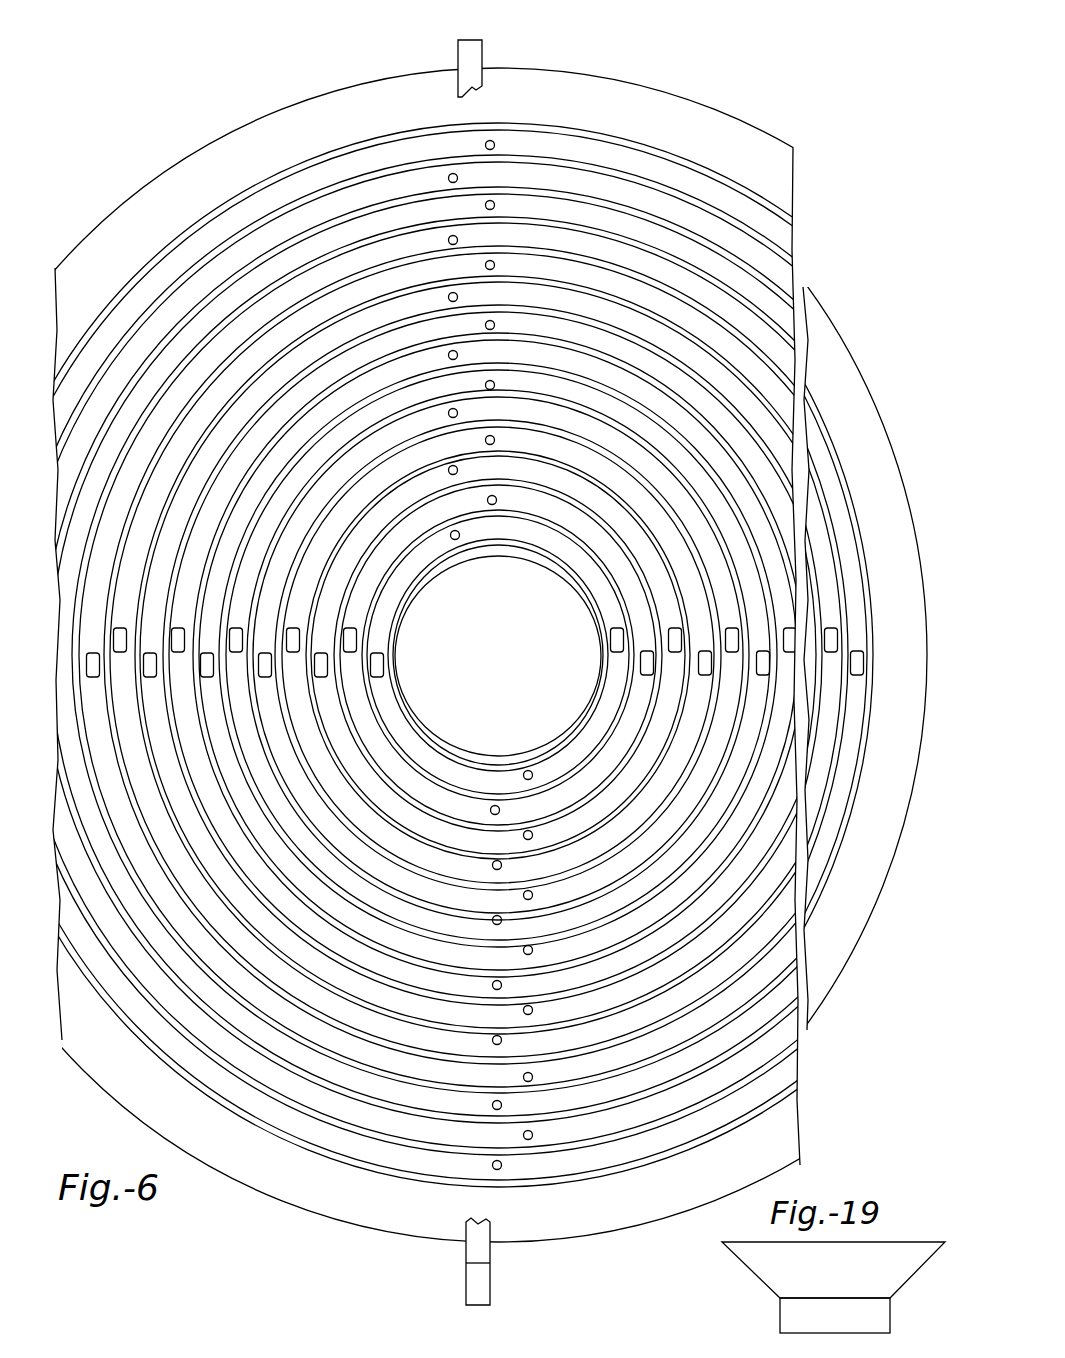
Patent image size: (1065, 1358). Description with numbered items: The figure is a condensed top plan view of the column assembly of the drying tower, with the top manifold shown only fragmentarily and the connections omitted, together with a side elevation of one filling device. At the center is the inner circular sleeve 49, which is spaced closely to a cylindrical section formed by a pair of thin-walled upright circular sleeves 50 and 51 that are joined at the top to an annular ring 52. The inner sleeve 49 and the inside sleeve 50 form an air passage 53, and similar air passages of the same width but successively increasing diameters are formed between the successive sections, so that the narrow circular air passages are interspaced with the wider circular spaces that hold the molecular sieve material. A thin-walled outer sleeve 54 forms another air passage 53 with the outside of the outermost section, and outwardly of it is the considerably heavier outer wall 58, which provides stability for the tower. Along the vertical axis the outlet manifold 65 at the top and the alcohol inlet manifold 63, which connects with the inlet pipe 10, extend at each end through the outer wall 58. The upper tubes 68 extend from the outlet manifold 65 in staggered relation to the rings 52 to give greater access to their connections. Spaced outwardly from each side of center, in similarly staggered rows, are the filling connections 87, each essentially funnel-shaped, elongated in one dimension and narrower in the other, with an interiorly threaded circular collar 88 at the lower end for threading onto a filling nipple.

In FIG. 6, the inlet pipe 10 is at (466, 1291).
In FIG. 6, the inner circular sleeve 49 is at (413, 714).
In FIG. 6, the inside sleeve 50 is at (446, 151).
In FIG. 6, the outside sleeve 51 is at (321, 164).
In FIG. 6, the annular ring 52 is at (376, 156).
In FIG. 6, the air passage 53 is at (246, 198).
In FIG. 6, the outer sleeve 54 is at (183, 242).
In FIG. 6, the outer wall 58 is at (623, 80).
In FIG. 6, the alcohol inlet manifold 63 is at (491, 1248).
In FIG. 6, the outlet manifold 65 is at (483, 45).
In FIG. 6, the upper tubes 68 is at (457, 174).
In FIG. 6, the filling connection 87 is at (113, 641).
In FIG. 19, the filling connection 87 is at (754, 1259).
In FIG. 19, the collar 88 is at (883, 1316).